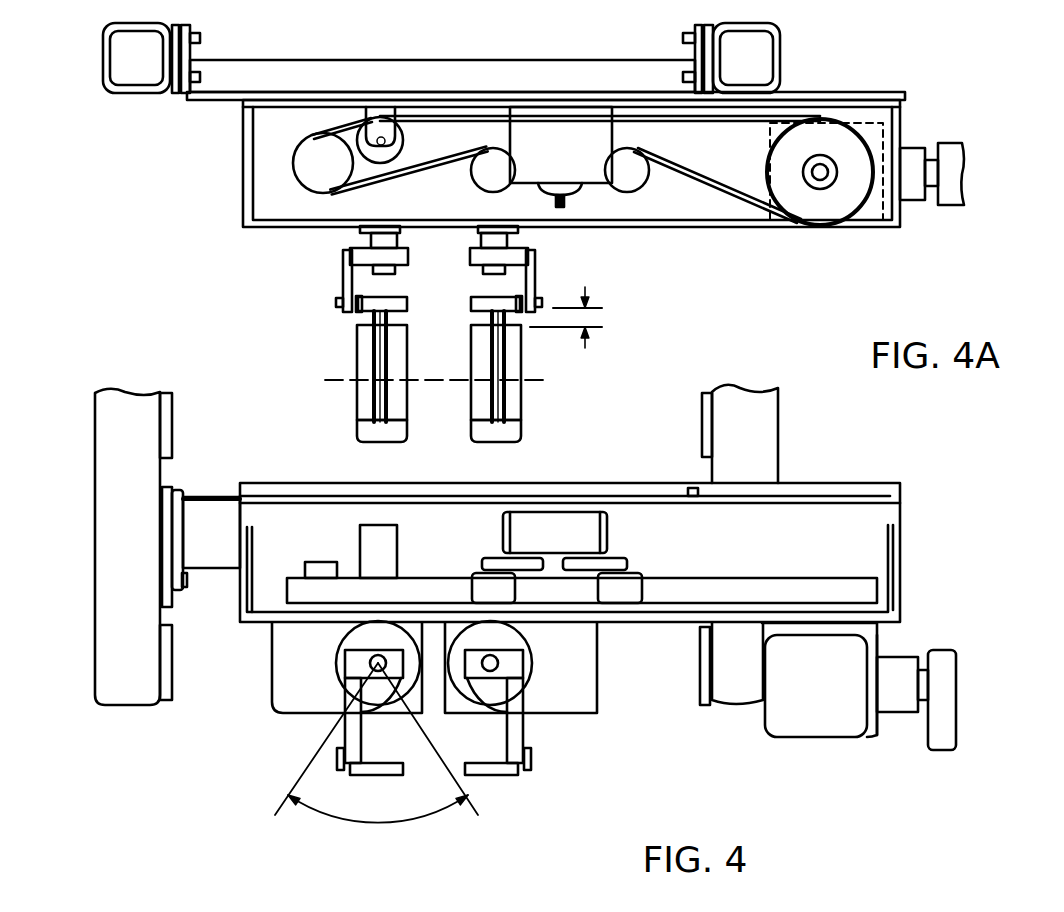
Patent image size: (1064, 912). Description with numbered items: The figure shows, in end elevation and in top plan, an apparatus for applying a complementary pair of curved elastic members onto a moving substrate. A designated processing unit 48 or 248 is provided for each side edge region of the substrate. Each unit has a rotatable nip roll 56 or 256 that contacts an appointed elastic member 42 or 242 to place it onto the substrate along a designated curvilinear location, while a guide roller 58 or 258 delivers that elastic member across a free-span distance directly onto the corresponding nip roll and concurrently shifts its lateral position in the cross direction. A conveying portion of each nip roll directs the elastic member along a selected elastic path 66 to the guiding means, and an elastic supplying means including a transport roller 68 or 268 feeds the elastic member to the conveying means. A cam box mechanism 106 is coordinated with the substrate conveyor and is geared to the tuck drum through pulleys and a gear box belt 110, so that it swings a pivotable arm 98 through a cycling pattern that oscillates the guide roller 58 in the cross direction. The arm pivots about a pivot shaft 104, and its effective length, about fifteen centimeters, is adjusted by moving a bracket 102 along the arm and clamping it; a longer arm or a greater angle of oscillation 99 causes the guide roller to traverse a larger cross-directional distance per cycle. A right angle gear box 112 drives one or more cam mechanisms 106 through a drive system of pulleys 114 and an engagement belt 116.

In FIG. 4A, the elastic member 42 is at (356, 372).
In FIG. 4A, the curved elastic processing unit 48 is at (250, 336).
In FIG. 4A, the nip roll 56 is at (357, 346).
In FIG. 4A, the guide roller 58 is at (407, 308).
In FIG. 4, the guide roller 58 is at (392, 777).
In FIG. 4A, the elastic path 66 is at (590, 316).
In FIG. 4A, the transport roller 68 is at (357, 432).
In FIG. 4A, the pivotable arm 98 is at (355, 240).
In FIG. 4, the pivotable arm 98 is at (352, 730).
In FIG. 4, the angle of oscillation 99 is at (410, 822).
In FIG. 4A, the bracket 102 is at (345, 292).
In FIG. 4, the bracket 102 is at (342, 779).
In FIG. 4A, the pivot shaft 104 is at (393, 272).
In FIG. 4, the cam box mechanism 106 is at (275, 688).
In FIG. 4, the gear box belt 110 is at (947, 723).
In FIG. 4A, the gear box 112 is at (872, 222).
In FIG. 4, the gear box 112 is at (803, 725).
In FIG. 4A, the pulleys 114 is at (650, 190).
In FIG. 4A, the engagement belt 116 is at (722, 198).
In FIG. 4A, the elastic member 242 is at (523, 405).
In FIG. 4A, the processing unit 248 is at (605, 346).
In FIG. 4A, the nip roll 256 is at (523, 358).
In FIG. 4A, the guide roller 258 is at (498, 366).
In FIG. 4, the guide roller 258 is at (494, 778).
In FIG. 4A, the transport roller 268 is at (523, 432).